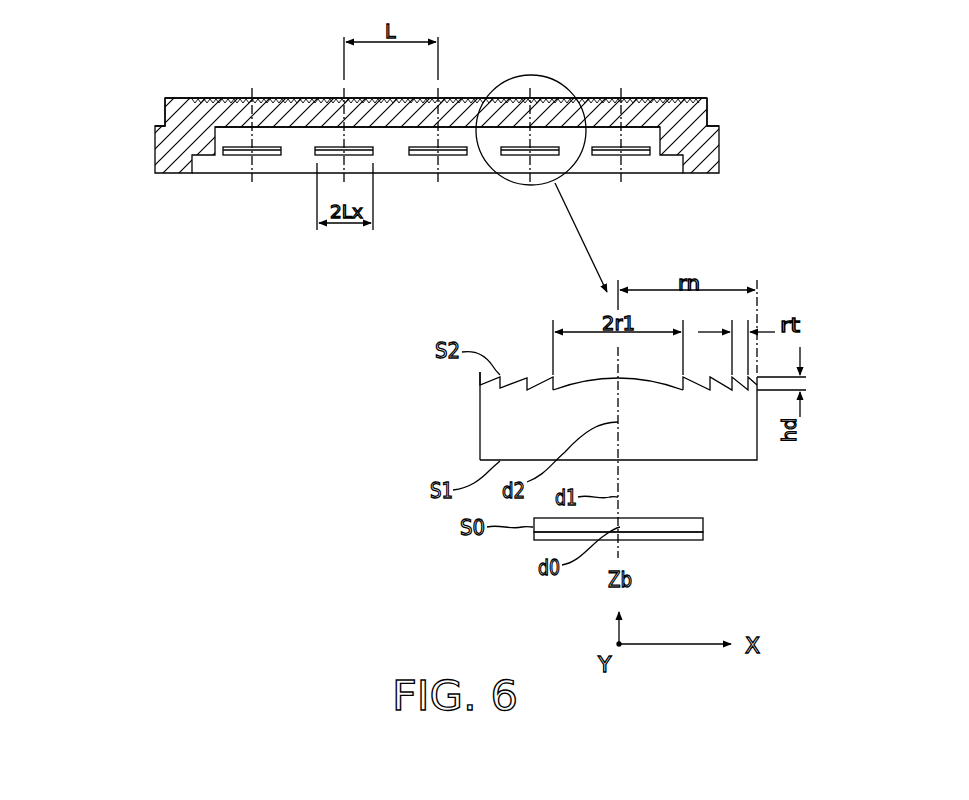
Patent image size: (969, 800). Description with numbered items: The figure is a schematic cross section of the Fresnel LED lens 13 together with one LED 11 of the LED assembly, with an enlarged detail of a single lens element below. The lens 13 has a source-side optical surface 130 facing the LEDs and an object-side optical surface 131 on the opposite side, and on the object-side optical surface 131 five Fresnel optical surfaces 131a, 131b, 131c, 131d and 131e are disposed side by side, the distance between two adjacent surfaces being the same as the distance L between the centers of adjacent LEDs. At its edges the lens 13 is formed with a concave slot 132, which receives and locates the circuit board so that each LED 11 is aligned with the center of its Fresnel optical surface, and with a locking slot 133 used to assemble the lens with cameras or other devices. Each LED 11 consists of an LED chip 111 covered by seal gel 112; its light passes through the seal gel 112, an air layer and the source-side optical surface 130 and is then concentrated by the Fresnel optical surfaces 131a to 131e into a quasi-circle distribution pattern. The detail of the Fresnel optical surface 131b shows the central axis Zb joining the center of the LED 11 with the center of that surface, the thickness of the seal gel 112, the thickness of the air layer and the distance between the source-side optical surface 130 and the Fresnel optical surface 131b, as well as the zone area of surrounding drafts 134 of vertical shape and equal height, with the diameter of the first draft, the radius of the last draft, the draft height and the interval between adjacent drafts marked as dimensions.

The Fresnel LED lens 13 is at (703, 150).
The locking slot 133 is at (160, 113).
The concave slot 132 is at (205, 177).
The source-side optical surface 130 is at (403, 129).
The object-side optical surface 131 is at (685, 97).
The Fresnel optical surface 131a is at (618, 97).
The Fresnel optical surface 131b is at (528, 97).
The Fresnel optical surface 131c is at (443, 97).
The Fresnel optical surface 131d is at (338, 97).
The Fresnel optical surface 131e is at (250, 97).
The Fresnel tooth structure 134 is at (507, 377).
The LED 11 is at (656, 536).
The seal gel 112 is at (688, 528).
The LED chip 111 is at (667, 538).